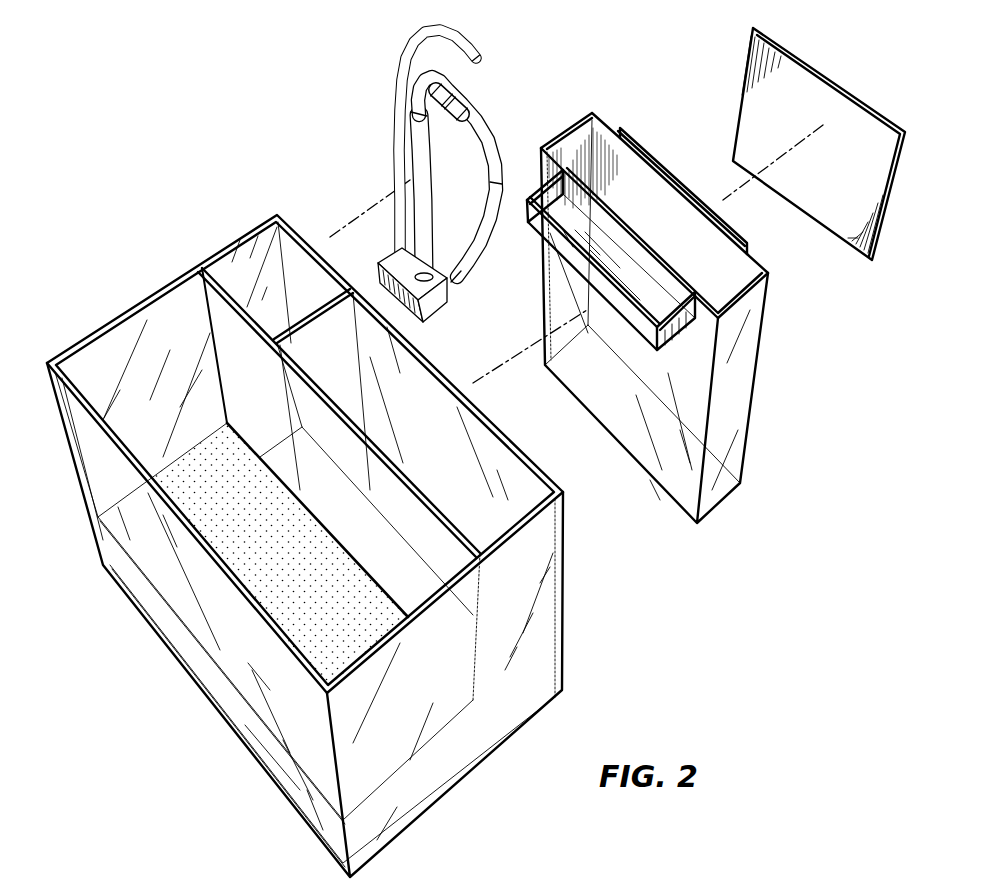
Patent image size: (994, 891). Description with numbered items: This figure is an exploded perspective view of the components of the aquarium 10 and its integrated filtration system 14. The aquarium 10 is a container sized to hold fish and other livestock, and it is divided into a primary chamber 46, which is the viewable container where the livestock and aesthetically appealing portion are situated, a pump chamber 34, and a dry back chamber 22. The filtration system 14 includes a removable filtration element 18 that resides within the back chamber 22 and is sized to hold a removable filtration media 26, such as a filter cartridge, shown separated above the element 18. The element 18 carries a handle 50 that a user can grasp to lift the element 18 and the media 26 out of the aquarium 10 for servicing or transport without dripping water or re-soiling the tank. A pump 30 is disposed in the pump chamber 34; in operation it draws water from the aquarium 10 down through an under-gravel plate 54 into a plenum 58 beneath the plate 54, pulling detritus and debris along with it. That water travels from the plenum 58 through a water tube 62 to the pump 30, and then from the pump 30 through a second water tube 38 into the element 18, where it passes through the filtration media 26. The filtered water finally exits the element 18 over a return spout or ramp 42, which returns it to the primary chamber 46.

The aquarium 10 is at (147, 278).
The filtration system 14 is at (415, 167).
The filtration element 18 is at (680, 310).
The back chamber 22 is at (503, 480).
The filtration media 26 is at (817, 65).
The pump 30 is at (435, 303).
The pump chamber 34 is at (252, 267).
The water tube 38 is at (453, 33).
The return spout or ramp 42 is at (637, 312).
The primary chamber 46 is at (168, 393).
The handle 50 is at (658, 155).
The under-gravel plate 54 is at (273, 572).
The plenum 58 is at (283, 762).
The water tube 62 is at (461, 101).